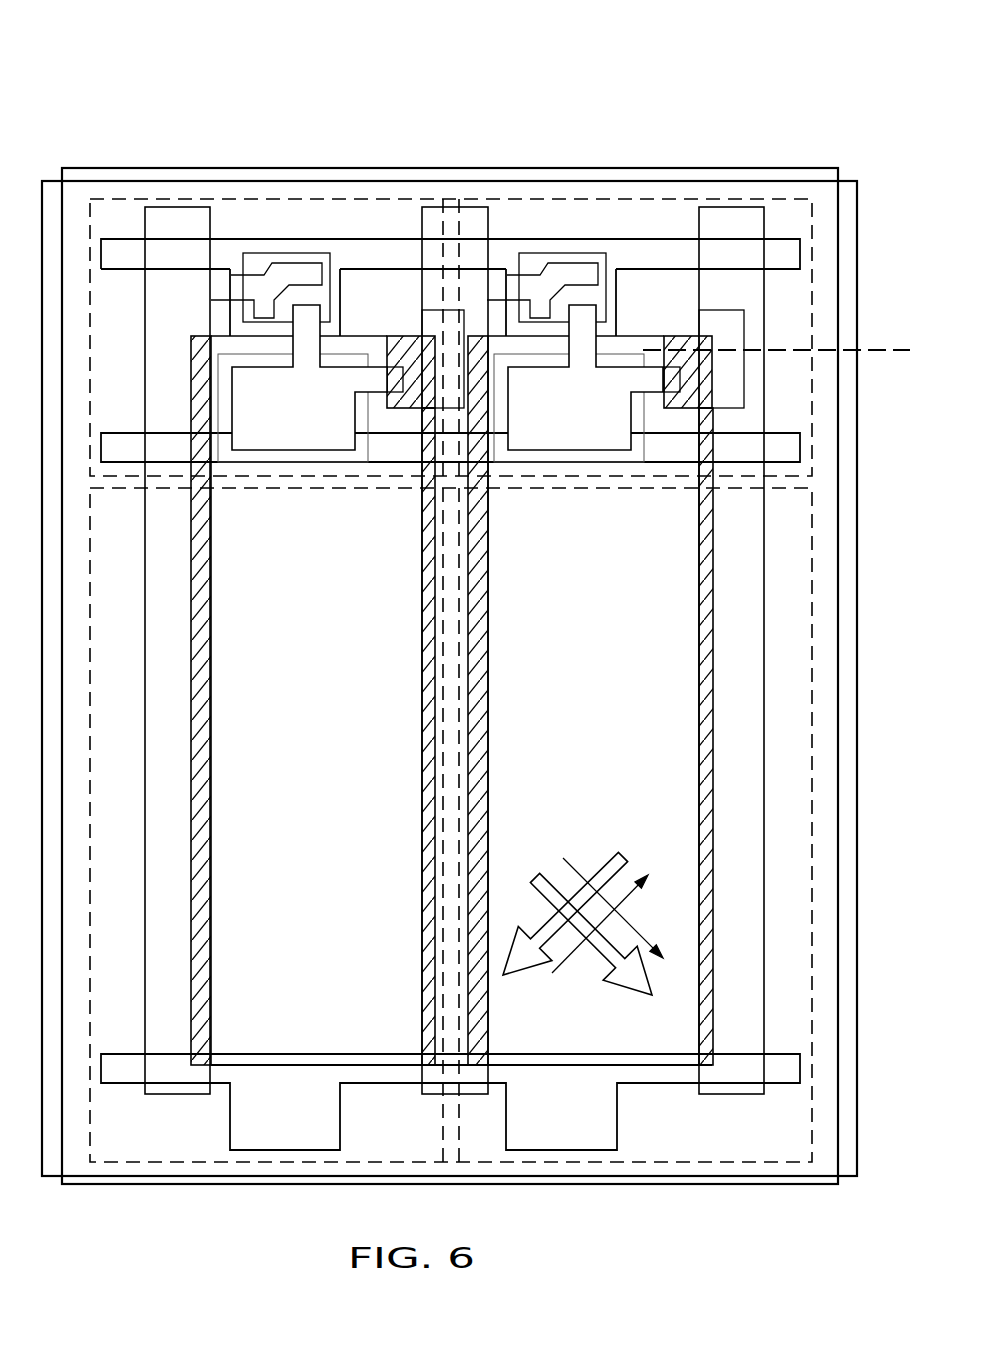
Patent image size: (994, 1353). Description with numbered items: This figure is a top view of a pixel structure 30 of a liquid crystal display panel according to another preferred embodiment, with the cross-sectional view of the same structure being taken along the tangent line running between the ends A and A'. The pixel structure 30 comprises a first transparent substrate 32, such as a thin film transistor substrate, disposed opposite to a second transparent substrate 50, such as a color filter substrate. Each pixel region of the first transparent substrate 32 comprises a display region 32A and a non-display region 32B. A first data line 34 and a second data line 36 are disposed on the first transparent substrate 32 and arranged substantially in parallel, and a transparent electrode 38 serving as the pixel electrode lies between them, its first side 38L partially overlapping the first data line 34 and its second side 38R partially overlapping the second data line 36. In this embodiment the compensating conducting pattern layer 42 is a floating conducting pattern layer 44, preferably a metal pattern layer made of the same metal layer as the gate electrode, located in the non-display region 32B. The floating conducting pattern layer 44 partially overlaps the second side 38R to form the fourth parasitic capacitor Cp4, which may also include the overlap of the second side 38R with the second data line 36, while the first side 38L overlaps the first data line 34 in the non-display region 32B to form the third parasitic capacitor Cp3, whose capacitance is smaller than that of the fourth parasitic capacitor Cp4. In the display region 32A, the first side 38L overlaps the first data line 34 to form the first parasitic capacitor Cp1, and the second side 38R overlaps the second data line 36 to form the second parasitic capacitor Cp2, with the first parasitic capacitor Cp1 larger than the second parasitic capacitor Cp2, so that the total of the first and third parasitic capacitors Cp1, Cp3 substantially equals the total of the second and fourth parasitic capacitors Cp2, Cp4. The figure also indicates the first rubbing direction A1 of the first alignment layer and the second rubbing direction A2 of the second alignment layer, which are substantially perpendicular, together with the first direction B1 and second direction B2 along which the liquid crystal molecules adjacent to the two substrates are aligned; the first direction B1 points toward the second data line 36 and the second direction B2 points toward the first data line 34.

The pixel structure 30 is at (767, 52).
The first transparent substrate 32 is at (773, 166).
The second transparent substrate 50 is at (860, 207).
The display region 32A is at (520, 198).
The non-display region 32B is at (813, 777).
The first data line 34 is at (448, 925).
The second data line 36 is at (737, 573).
The transparent electrode 38 is at (319, 1007).
The first side 38L is at (512, 716).
The second side 38R is at (670, 761).
The compensating conducting pattern layer 42 is at (664, 322).
The floating conducting pattern layer 44 is at (683, 335).
The first parasitic capacitor Cp1 is at (487, 542).
The second parasitic capacitor Cp2 is at (698, 590).
The third parasitic capacitor Cp3 is at (467, 437).
The fourth parasitic capacitor Cp4 is at (712, 338).
The tangent line end A is at (776, 444).
The tangent line end A' is at (656, 444).
The first rubbing direction A1 is at (637, 917).
The second rubbing direction A2 is at (650, 873).
The first direction B1 is at (645, 993).
The second direction B2 is at (533, 973).